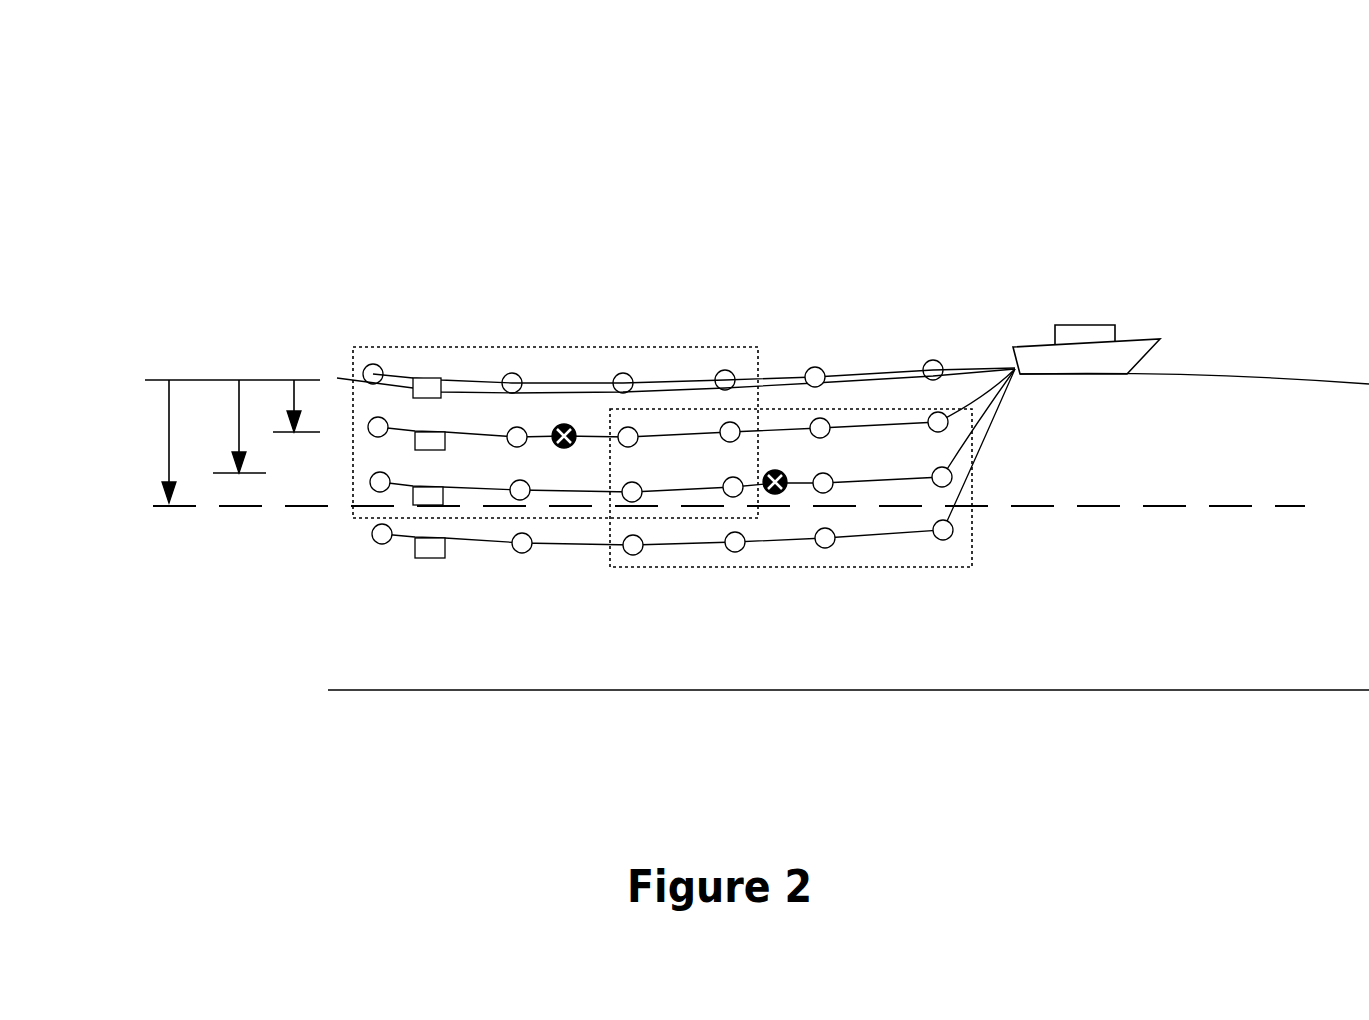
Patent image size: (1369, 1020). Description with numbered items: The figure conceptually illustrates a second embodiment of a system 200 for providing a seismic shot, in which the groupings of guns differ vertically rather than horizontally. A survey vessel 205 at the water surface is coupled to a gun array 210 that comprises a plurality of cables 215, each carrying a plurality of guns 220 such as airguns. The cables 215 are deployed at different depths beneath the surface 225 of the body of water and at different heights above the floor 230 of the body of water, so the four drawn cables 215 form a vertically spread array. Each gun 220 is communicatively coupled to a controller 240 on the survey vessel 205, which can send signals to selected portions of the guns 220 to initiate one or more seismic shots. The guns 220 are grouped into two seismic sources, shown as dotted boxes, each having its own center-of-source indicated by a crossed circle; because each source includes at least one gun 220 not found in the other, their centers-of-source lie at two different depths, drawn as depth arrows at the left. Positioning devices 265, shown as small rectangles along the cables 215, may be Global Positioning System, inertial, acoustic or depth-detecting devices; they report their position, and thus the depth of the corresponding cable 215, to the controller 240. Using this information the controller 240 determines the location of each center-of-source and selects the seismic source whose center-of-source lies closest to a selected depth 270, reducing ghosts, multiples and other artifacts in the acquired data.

The system for providing a seismic shot 200 is at (1084, 104).
The survey vessel 205 is at (1143, 339).
The gun array 210 is at (643, 242).
The cable 215 is at (877, 375).
The gun 220 is at (818, 368).
The surface of a body of water 225 is at (1280, 378).
The floor of the body of water 230 is at (1087, 690).
The controller 240 is at (1090, 322).
The positioning device 265 is at (431, 378).
The selected depth 270 is at (168, 460).